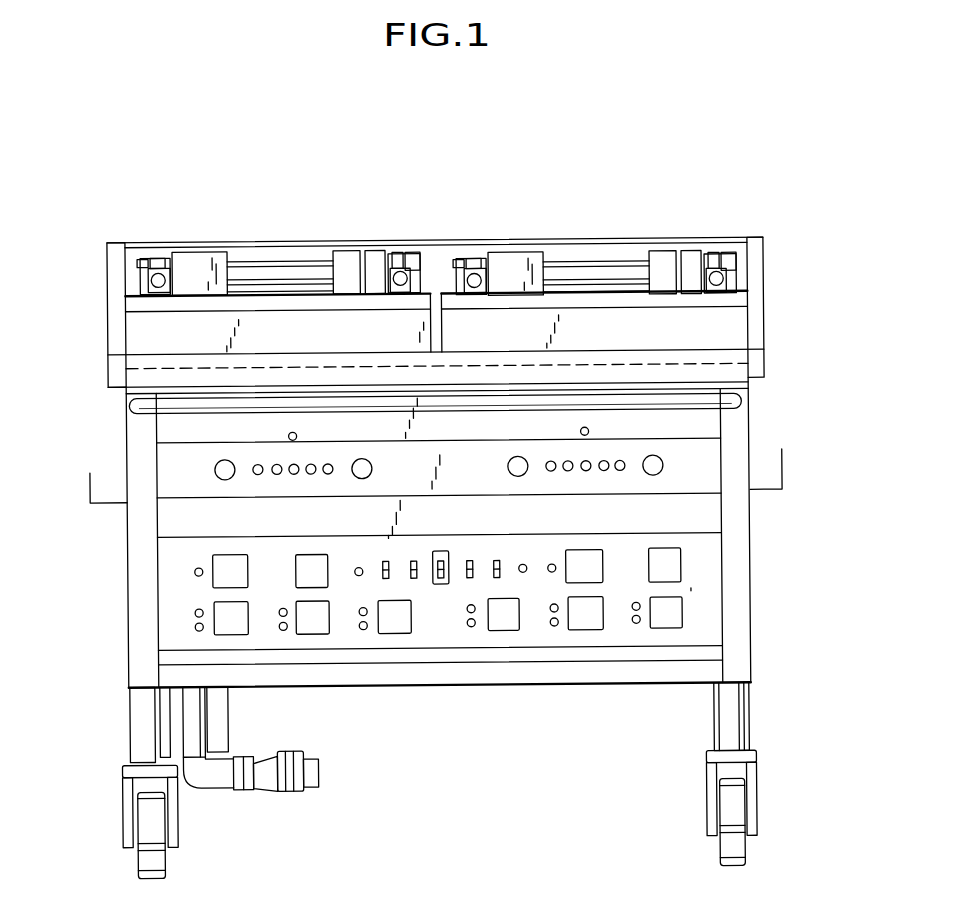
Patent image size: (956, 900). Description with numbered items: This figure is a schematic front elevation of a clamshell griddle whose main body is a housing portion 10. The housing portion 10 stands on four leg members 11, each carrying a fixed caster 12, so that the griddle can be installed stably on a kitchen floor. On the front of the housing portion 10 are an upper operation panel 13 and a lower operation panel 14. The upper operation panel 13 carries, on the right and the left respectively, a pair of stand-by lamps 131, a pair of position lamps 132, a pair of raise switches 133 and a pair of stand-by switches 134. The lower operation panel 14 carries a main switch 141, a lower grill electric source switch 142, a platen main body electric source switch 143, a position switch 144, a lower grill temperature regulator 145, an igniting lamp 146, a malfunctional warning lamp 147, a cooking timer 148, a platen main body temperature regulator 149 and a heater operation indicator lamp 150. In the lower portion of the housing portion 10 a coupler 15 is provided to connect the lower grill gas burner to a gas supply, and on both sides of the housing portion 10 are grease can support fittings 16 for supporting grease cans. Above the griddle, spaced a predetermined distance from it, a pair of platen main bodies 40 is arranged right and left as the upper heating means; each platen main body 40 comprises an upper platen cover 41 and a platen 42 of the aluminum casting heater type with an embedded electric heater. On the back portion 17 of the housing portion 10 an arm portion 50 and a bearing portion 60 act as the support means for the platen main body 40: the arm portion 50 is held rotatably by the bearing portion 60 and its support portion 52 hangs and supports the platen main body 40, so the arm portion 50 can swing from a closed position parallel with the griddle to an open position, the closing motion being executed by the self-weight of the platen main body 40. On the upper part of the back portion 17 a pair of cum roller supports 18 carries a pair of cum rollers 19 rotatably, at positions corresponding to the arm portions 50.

The housing portion 10 is at (125, 639).
The leg members 11 is at (147, 720).
The fixed casters 12 is at (140, 858).
The upper operation panel 13 is at (385, 388).
The stand-by lamps 131 is at (290, 433).
The position lamps 132 is at (254, 465).
The raise switches 133 is at (218, 476).
The stand-by switches 134 is at (355, 476).
The lower operation panel 14 is at (511, 638).
The main switch 141 is at (440, 585).
The lower grill electric source switch 142 is at (469, 578).
The platen main body electric source switch 143 is at (496, 578).
The position switch 144 is at (523, 573).
The lower grill temperature regulator 145 is at (681, 618).
The igniting lamp 146 is at (636, 625).
The malfunctional warning lamp 147 is at (681, 608).
The cooking timer 148 is at (680, 570).
The platen main body temperature regulator 149 is at (602, 562).
The heater operation indicator lamp 150 is at (554, 566).
The coupler 15 is at (312, 790).
The grease can support fittings 16 is at (90, 470).
The back portion 17 is at (593, 247).
The cum roller supports 18 is at (455, 262).
The cum rollers 19 is at (477, 258).
The platen main body 40 is at (478, 319).
The upper platen cover 41 is at (737, 300).
The platen 42 is at (727, 335).
The arm portion 50 is at (502, 268).
The support portion 52 is at (726, 280).
The bearing portion 60 is at (518, 243).